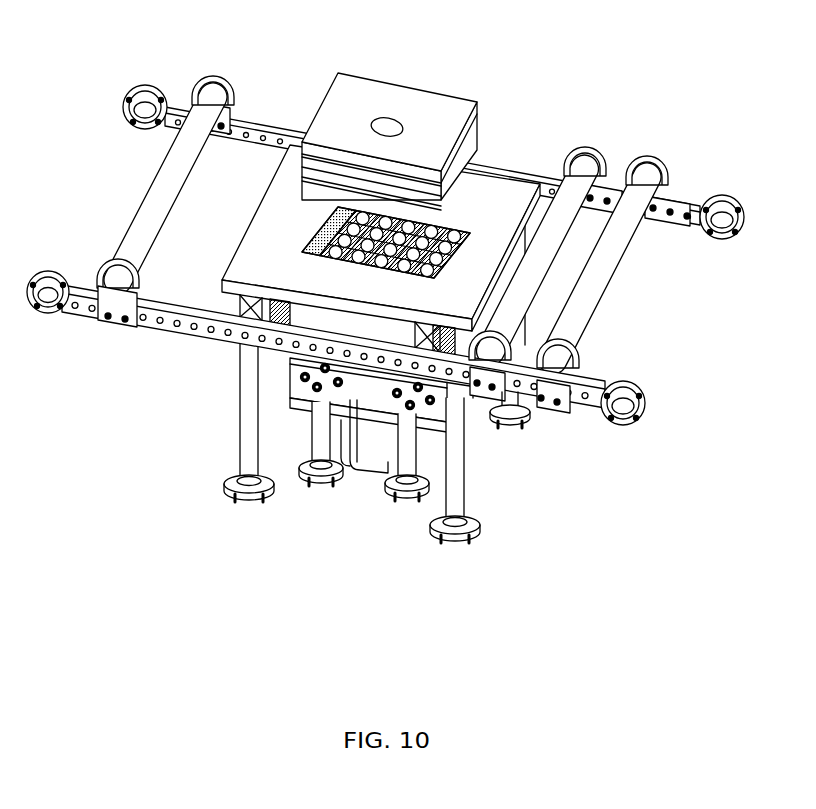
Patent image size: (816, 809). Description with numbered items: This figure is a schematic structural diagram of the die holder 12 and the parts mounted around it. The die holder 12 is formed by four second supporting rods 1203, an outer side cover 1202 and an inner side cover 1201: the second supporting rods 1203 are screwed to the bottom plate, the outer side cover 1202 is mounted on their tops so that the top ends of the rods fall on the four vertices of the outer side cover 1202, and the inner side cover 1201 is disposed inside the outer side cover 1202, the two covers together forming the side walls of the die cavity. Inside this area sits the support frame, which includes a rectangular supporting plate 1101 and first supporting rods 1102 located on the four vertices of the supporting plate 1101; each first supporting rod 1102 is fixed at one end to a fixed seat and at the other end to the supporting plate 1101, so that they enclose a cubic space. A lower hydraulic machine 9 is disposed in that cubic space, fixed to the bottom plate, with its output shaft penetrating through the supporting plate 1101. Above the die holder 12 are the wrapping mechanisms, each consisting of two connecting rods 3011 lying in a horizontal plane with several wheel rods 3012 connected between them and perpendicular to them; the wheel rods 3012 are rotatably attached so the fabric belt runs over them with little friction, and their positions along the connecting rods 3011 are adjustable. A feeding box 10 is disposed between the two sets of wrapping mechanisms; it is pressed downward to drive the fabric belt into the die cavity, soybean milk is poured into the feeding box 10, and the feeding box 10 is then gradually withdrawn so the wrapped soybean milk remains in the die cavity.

The feeding box 10 is at (400, 100).
The wheel rod 3012 is at (568, 193).
The connecting rod 3011 is at (205, 338).
The die holder 12 is at (299, 356).
The outer side cover 1202 is at (277, 275).
The inner side cover 1201 is at (285, 372).
The second supporting rod 1203 is at (252, 453).
The supporting plate 1101 is at (343, 420).
The first supporting rod 1102 is at (443, 537).
The lower hydraulic machine 9 is at (375, 455).